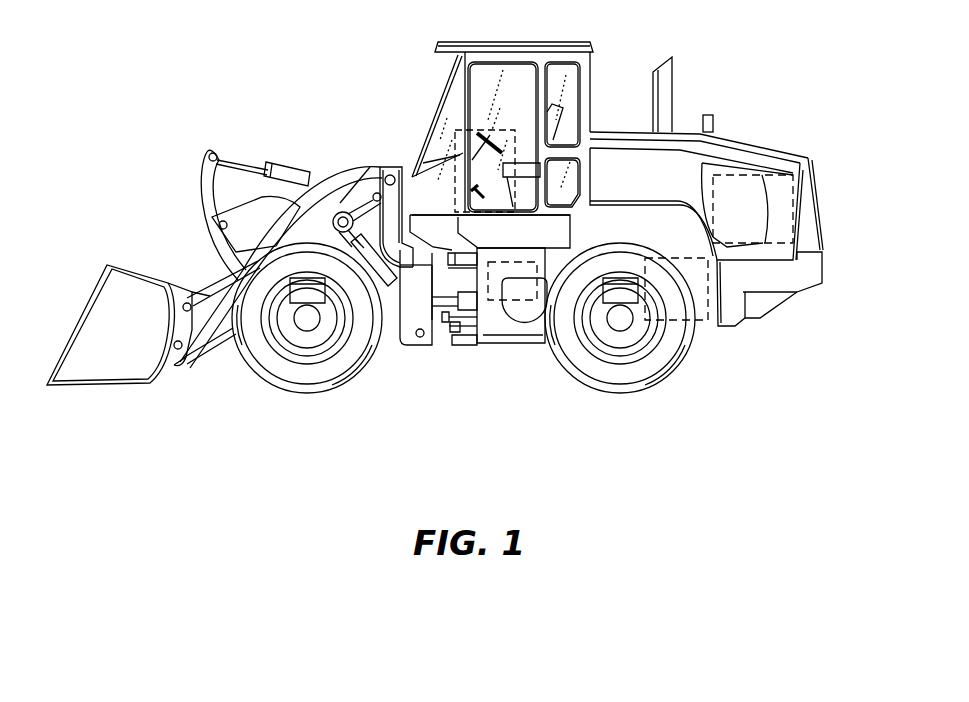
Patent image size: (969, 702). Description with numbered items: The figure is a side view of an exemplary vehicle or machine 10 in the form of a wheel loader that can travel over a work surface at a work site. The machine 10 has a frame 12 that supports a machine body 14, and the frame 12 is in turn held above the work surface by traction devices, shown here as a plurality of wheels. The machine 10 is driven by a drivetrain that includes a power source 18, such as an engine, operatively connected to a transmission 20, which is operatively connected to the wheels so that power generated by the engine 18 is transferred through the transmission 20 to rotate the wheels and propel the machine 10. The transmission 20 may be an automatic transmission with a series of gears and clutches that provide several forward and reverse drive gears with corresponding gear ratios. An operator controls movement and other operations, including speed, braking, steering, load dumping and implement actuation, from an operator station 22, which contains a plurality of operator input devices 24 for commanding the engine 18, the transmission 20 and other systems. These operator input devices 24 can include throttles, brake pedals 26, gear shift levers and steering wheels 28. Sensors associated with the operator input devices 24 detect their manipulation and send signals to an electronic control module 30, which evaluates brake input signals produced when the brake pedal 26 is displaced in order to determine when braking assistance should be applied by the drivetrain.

The machine 10 is at (277, 93).
The frame 12 is at (777, 305).
The machine body 14 is at (750, 158).
The power source 18 is at (807, 205).
The transmission 20 is at (700, 320).
The operator station 22 is at (513, 83).
The operator input devices 24 is at (465, 93).
The brake pedal 26 is at (477, 190).
The steering wheel 28 is at (477, 130).
The electronic control module 30 is at (517, 300).